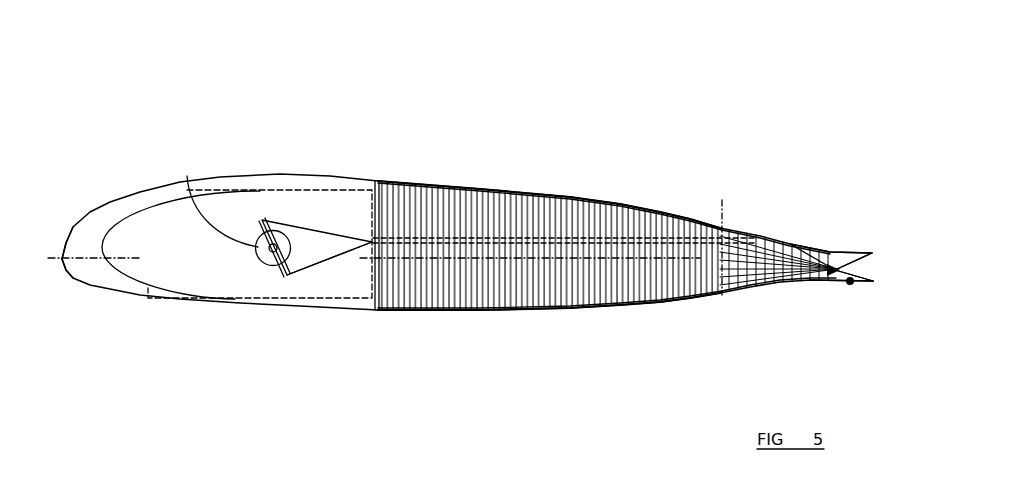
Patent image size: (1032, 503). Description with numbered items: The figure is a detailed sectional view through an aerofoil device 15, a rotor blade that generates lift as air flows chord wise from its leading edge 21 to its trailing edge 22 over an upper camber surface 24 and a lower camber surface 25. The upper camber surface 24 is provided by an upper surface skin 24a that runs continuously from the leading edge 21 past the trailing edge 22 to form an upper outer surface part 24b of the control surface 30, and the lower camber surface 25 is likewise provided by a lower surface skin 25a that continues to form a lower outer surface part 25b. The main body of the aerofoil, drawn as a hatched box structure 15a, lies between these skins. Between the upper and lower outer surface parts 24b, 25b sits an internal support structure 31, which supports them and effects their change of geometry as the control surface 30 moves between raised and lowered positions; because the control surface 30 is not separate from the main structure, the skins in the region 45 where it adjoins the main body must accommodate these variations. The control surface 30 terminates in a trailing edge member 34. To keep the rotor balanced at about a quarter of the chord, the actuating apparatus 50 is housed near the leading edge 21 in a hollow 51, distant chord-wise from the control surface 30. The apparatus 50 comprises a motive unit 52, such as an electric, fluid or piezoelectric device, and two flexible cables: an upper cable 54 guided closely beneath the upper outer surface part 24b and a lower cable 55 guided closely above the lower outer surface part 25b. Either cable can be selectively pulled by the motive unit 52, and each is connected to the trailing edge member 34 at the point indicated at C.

The aerofoil device 15 is at (450, 114).
The airfoil box structure 15a is at (508, 213).
The leading edge 21 is at (61, 270).
The trailing edge 22 is at (837, 222).
The upper camber surface 24 is at (402, 176).
The upper surface skin 24a is at (588, 197).
The upper outer surface part 24b is at (793, 246).
The lower camber surface 25 is at (462, 315).
The lower surface skin 25a is at (508, 312).
The lower outer surface part 25b is at (793, 283).
The control surface 30 is at (851, 250).
The internal support structure 31 is at (740, 272).
The trailing edge member 34 is at (873, 282).
The region 45 is at (723, 198).
The actuating apparatus 50 is at (266, 270).
The hollow 51 is at (343, 200).
The motive unit 52 is at (187, 190).
The upper cable 54 is at (313, 227).
The lower cable 55 is at (325, 256).
The connection point C is at (850, 286).